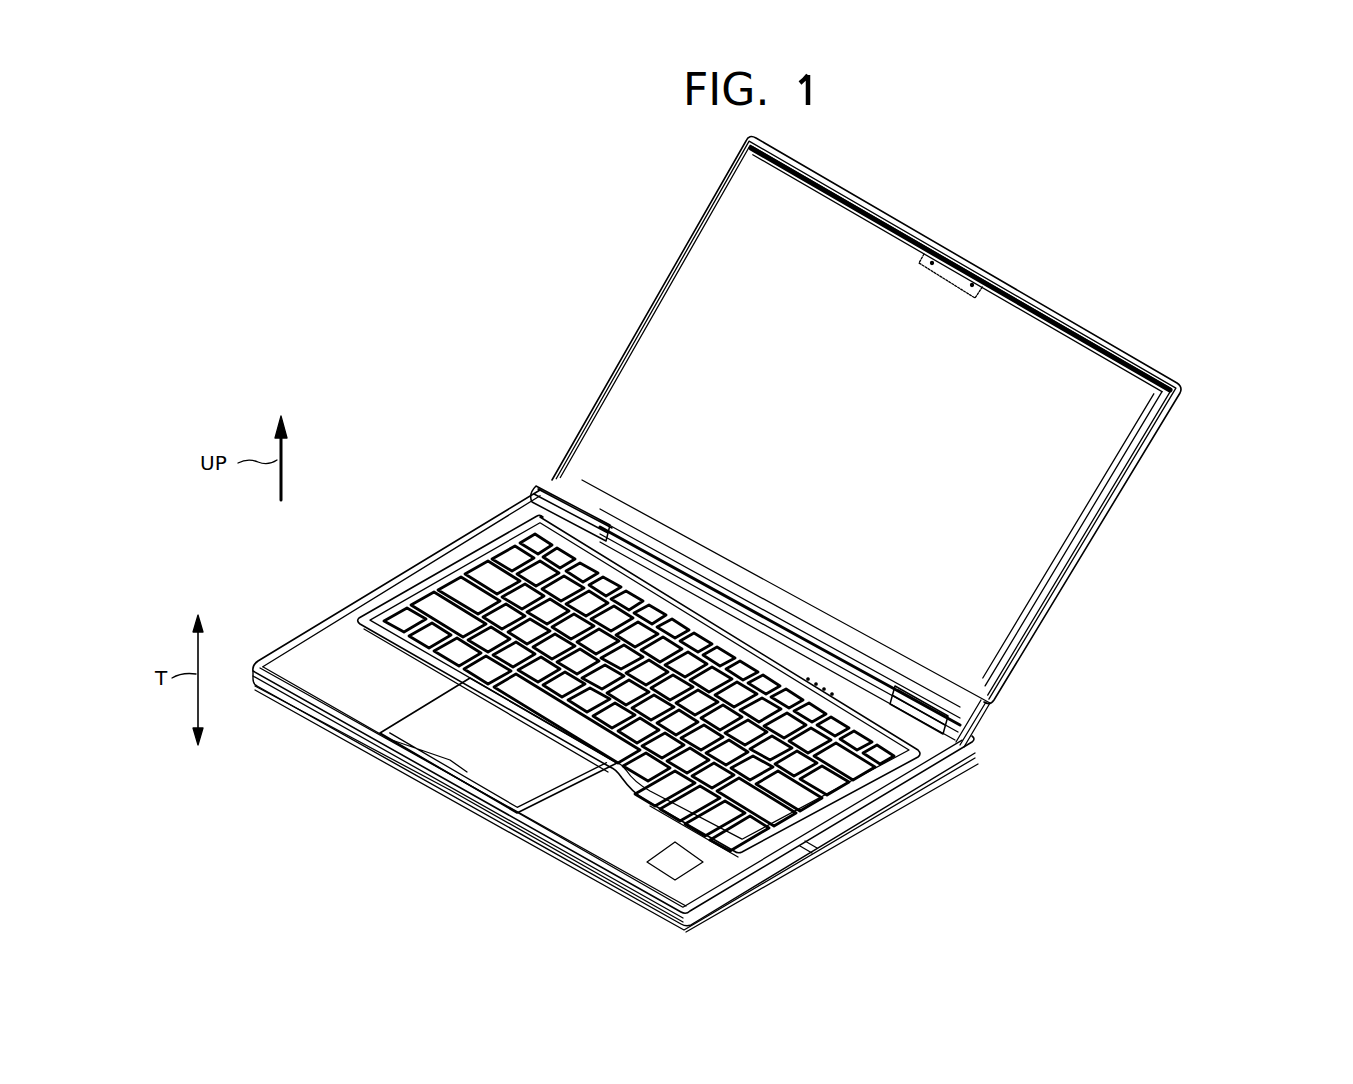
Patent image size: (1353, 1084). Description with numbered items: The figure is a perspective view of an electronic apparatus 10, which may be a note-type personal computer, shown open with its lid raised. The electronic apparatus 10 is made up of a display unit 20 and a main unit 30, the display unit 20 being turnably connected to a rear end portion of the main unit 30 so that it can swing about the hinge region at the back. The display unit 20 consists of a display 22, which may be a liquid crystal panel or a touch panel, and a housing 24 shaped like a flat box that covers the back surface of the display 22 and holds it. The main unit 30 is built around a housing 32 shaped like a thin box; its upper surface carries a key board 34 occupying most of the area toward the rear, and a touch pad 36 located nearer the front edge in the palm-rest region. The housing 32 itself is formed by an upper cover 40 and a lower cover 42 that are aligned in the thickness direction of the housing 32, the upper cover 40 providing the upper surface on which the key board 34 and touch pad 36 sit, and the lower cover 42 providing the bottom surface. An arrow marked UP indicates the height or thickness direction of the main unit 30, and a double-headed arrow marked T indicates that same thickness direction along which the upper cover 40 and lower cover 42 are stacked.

The electronic apparatus 10 is at (507, 302).
The display unit 20 is at (1195, 478).
The display 22 is at (1096, 494).
The housing 24 is at (1100, 532).
The main unit 30 is at (312, 735).
The housing 32 is at (418, 845).
The key board 34 is at (485, 566).
The touch pad 36 is at (541, 793).
The upper cover 40 is at (378, 714).
The lower cover 42 is at (400, 768).